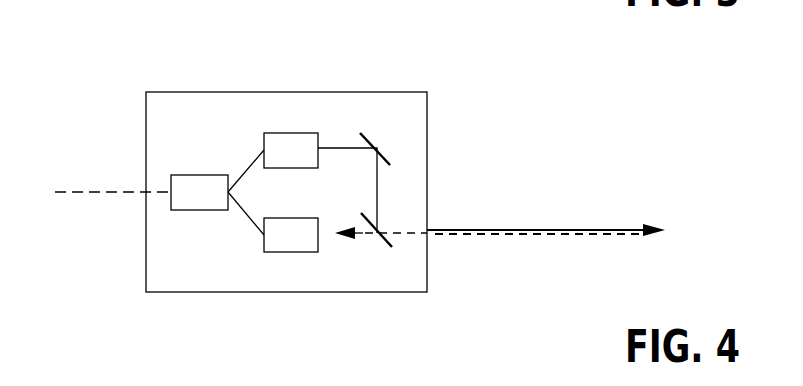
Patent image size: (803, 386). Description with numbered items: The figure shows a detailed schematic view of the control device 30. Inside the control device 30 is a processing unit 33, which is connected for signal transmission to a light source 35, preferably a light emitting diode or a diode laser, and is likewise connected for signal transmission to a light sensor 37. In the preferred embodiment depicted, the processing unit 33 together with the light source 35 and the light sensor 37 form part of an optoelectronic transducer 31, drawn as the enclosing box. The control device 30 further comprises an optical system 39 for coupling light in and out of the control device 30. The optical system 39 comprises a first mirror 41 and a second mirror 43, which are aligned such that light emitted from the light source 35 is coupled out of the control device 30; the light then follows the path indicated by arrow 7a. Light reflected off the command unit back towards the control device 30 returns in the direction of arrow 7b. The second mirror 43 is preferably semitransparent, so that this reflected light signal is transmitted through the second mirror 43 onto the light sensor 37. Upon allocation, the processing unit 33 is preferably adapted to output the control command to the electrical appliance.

The control device 30 is at (198, 68).
The optoelectronic transducer 31 is at (405, 92).
The processing unit 33 is at (205, 203).
The light source 35 is at (290, 138).
The light sensor 37 is at (290, 253).
The optical system 39 is at (383, 278).
The first mirror 41 is at (392, 157).
The second mirror 43 is at (362, 215).
The arrow 7a is at (578, 229).
The arrow 7b is at (528, 236).